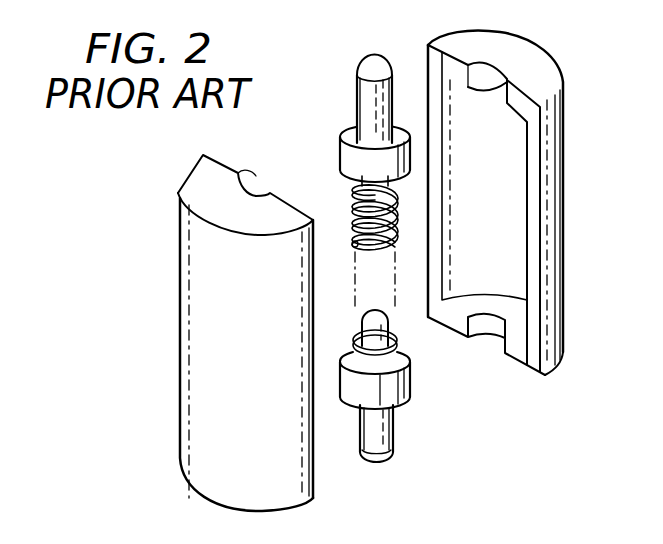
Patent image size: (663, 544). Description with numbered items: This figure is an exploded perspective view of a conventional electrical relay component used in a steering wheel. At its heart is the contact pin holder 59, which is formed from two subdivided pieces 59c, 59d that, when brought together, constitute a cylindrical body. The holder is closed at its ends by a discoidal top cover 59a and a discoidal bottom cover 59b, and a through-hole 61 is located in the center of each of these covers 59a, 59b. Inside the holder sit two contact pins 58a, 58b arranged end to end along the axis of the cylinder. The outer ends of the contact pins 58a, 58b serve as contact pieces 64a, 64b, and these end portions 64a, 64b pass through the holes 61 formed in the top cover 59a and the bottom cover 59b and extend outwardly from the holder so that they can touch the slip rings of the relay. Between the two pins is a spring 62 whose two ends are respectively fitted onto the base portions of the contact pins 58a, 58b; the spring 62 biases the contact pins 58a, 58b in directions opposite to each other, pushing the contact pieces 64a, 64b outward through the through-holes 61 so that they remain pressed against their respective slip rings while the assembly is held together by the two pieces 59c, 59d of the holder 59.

The contact pin holder 59 is at (182, 373).
The discoidal top cover 59a is at (288, 214).
The discoidal bottom cover 59b is at (520, 358).
The subdivided piece 59c is at (180, 312).
The subdivided piece 59d is at (556, 250).
The through-hole 61 is at (241, 185).
The spring 62 is at (393, 240).
The contact pin 58a is at (356, 100).
The contact pin 58b is at (403, 413).
The contact piece 64a is at (377, 62).
The contact piece 64b is at (378, 463).